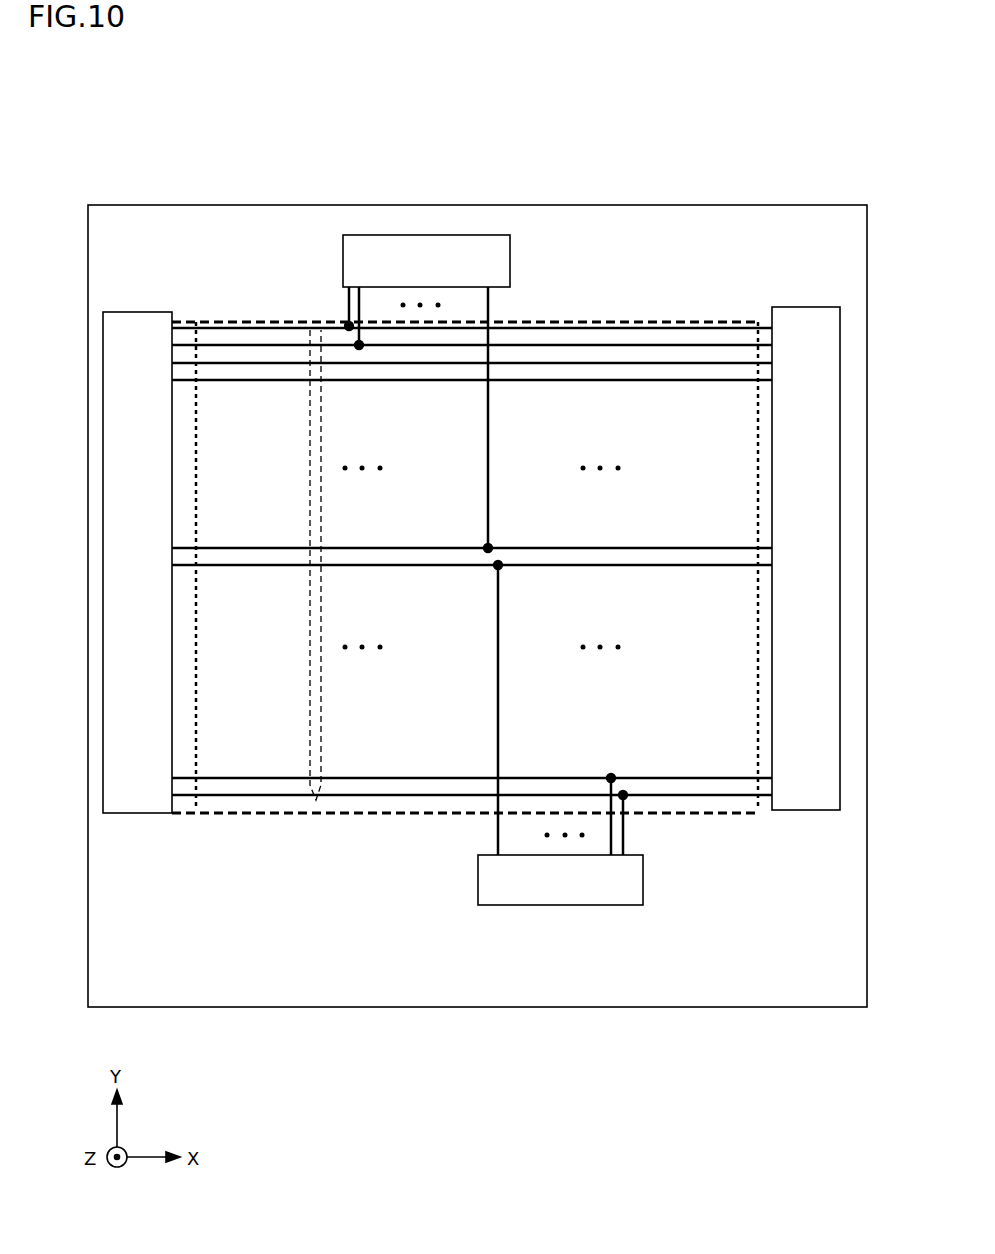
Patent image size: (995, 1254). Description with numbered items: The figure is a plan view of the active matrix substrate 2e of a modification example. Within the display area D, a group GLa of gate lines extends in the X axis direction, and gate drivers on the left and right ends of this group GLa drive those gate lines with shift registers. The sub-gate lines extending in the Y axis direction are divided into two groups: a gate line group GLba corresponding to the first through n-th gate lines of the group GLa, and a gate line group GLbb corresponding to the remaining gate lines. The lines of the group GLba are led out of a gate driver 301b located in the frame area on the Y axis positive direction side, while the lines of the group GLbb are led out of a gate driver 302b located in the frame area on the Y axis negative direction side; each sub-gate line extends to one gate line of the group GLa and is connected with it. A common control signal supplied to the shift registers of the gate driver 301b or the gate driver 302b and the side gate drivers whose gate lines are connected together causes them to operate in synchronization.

The active matrix substrate 2e is at (488, 160).
The gate driver 301b is at (510, 252).
The gate driver 302b is at (643, 897).
The gate line group GLa is at (316, 802).
The gate line group GLba is at (345, 302).
The gate line group GLbb is at (497, 826).
The display area D is at (760, 817).